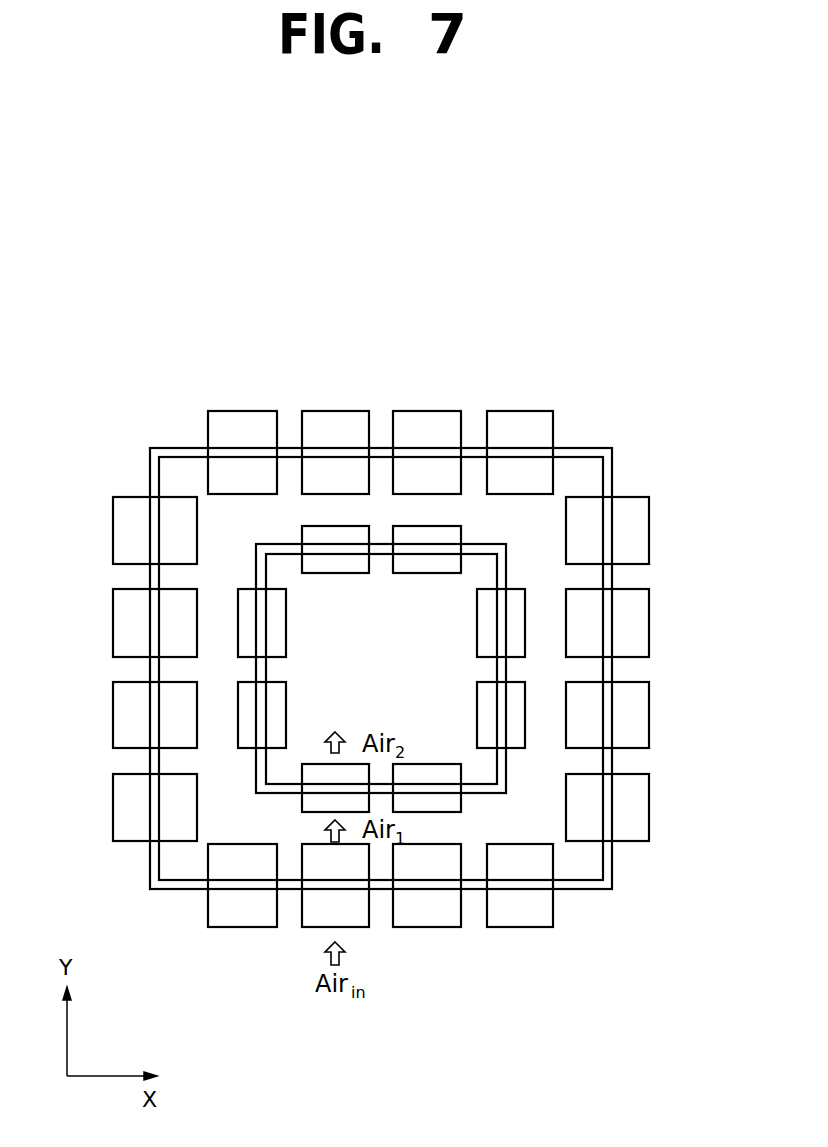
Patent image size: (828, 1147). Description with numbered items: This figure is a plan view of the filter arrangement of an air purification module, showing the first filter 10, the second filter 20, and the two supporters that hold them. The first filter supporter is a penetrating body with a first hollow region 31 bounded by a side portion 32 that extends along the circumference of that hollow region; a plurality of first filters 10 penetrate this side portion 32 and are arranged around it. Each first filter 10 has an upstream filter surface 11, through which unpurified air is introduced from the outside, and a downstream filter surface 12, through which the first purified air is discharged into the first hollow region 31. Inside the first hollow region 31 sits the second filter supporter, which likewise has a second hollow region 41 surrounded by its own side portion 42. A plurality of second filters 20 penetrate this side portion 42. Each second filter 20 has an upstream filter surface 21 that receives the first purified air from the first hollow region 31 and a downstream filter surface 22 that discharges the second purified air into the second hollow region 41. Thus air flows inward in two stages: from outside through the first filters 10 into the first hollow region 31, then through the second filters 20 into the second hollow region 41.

The first filter 10 is at (130, 623).
The (1-1)th filter surface 11 is at (113, 530).
The (1-2)th filter surface 12 is at (200, 530).
The second filter 20 is at (515, 730).
The (2-1)th filter surface 21 is at (525, 622).
The (2-2)th filter surface 22 is at (477, 623).
The first hollow region 31 is at (513, 517).
The side portion 32 is at (613, 470).
The second hollow region 41 is at (327, 700).
The side portion 42 is at (506, 775).